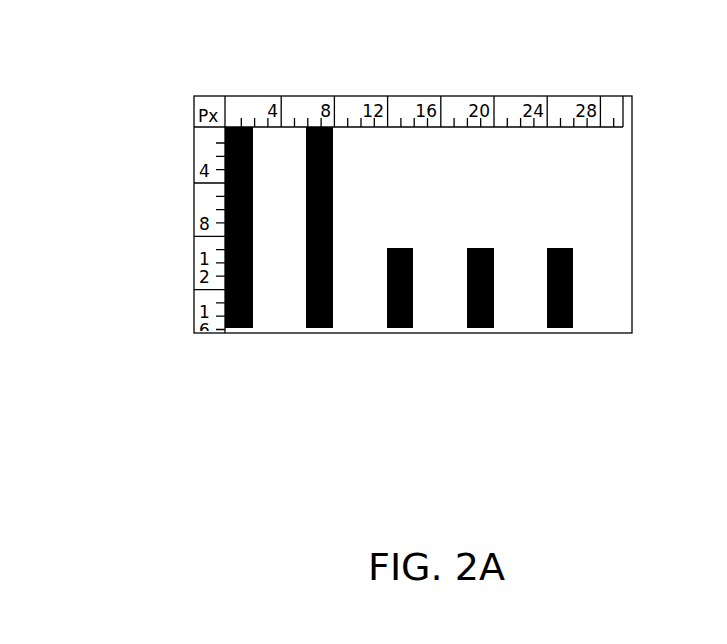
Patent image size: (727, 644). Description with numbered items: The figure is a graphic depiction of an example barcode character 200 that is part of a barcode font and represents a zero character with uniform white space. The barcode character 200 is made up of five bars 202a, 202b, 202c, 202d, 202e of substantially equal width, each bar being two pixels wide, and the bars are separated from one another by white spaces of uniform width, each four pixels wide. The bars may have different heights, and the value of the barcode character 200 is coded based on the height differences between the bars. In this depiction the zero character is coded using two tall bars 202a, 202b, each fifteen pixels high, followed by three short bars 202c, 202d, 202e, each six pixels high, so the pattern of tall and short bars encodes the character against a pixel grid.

The barcode character 200 is at (145, 41).
The bar 202a is at (232, 330).
The bar 202b is at (323, 330).
The bar 202c is at (398, 328).
The bar 202d is at (478, 328).
The bar 202e is at (563, 328).